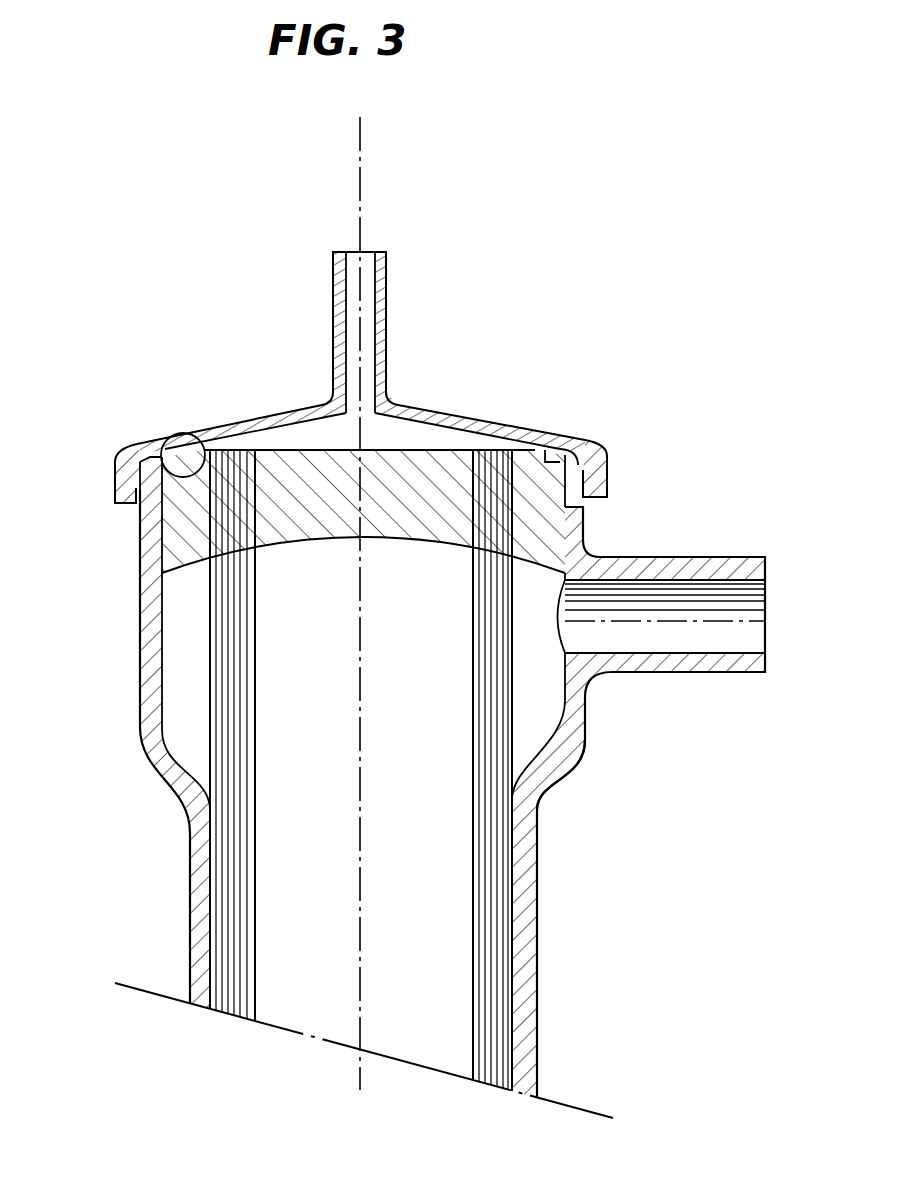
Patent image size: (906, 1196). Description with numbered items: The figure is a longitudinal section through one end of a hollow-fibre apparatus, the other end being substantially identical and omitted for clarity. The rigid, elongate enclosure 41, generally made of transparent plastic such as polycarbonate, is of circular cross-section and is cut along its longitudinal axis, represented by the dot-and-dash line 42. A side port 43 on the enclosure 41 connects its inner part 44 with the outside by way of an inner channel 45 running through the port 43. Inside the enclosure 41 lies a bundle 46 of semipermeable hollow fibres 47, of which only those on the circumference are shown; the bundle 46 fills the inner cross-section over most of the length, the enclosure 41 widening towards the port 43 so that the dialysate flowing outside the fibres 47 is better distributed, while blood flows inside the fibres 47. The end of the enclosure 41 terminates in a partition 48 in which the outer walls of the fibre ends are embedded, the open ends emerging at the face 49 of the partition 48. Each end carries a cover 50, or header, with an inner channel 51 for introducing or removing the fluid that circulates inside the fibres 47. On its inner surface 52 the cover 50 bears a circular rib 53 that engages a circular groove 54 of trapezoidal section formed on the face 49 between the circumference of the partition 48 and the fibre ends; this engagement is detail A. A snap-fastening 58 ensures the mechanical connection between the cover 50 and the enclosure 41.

The enclosure 41 is at (530, 856).
The dot-and-dash line 42 is at (362, 150).
The side port 43 is at (720, 660).
The inner part of the enclosure 44 is at (530, 748).
The inner channel 45 is at (648, 635).
The bundle of hollow fibres 46 is at (465, 985).
The hollow fibres 47 is at (562, 514).
The partition 48 is at (458, 450).
The face of the partition 49 is at (400, 448).
The cover 50 is at (390, 400).
The inner channel of the cover 51 is at (370, 268).
The inner surface of the cover 52 is at (278, 412).
The circular rib 53 is at (530, 440).
The circular groove 54 is at (135, 437).
The snap-fastening 58 is at (605, 435).
The detail A is at (172, 432).